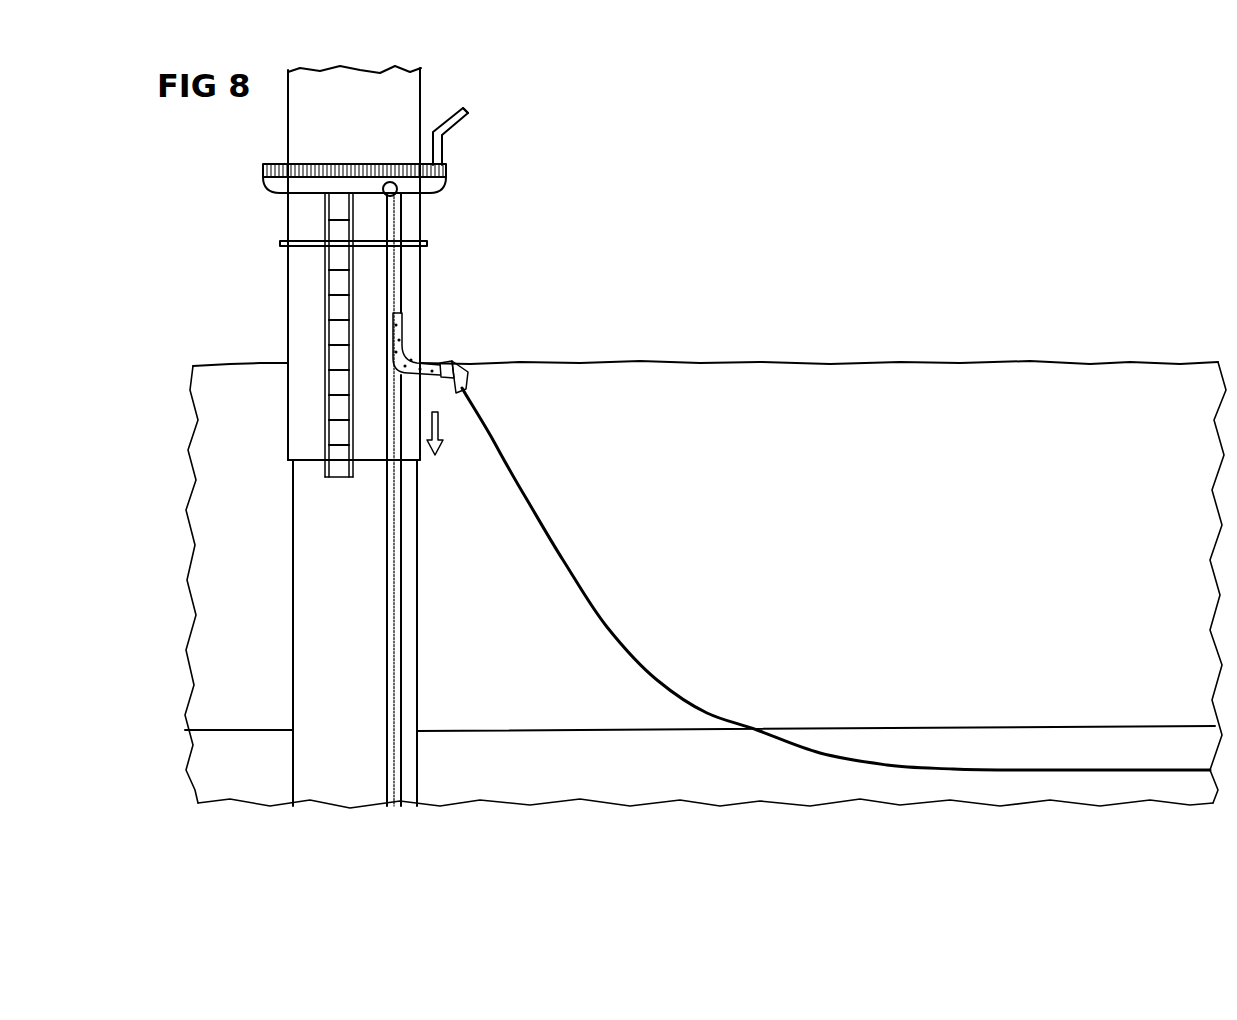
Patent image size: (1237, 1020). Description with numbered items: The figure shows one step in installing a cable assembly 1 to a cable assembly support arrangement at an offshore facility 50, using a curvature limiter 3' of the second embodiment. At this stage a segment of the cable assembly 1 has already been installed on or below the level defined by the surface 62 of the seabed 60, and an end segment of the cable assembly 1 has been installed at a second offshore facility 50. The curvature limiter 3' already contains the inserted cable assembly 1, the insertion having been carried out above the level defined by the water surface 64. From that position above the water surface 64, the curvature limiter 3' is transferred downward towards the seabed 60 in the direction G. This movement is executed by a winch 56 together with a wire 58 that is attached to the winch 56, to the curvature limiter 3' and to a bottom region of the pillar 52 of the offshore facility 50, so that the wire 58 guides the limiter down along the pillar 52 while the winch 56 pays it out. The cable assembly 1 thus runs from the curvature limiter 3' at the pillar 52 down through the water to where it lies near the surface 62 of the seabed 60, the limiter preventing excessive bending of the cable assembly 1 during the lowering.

The cable assembly 1 is at (1120, 768).
The curvature limiter 3' is at (430, 353).
The offshore facility 50 is at (262, 476).
The pillar 52 is at (298, 338).
The winch 56 is at (398, 190).
The wire 58 is at (392, 275).
The seabed 60 is at (1176, 735).
The surface of the seabed 62 is at (1110, 727).
The water surface 64 is at (1115, 360).
The direction G is at (440, 435).